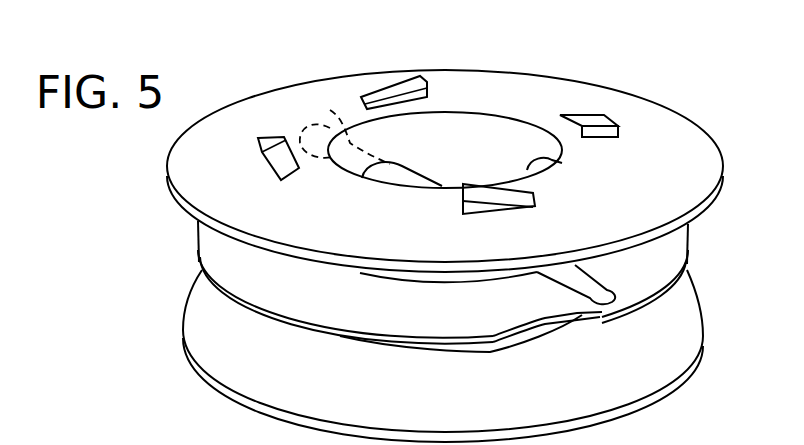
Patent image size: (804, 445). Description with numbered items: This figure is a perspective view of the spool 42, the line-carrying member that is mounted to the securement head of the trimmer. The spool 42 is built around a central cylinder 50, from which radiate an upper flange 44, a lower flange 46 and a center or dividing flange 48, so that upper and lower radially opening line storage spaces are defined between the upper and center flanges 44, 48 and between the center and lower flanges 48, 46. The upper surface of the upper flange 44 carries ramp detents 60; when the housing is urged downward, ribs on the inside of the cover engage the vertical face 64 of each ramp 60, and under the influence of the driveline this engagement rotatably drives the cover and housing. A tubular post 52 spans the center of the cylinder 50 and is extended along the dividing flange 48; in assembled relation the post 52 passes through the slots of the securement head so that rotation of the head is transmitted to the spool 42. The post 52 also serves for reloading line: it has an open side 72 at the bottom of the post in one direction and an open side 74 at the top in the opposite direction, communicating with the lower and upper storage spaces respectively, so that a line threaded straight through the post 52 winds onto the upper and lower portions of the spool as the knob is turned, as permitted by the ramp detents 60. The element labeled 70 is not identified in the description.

The spool 42 is at (679, 87).
The upper flange 44 is at (684, 148).
The lower flange 46 is at (668, 332).
The center or dividing flange 48 is at (676, 260).
The cylinder 50 is at (490, 127).
The tubular post 52 is at (400, 170).
The ramp detents 60 is at (398, 90).
The vertical face 64 is at (618, 125).
The boss 70 is at (560, 163).
The open side 72 is at (330, 110).
The open side 74 is at (603, 304).